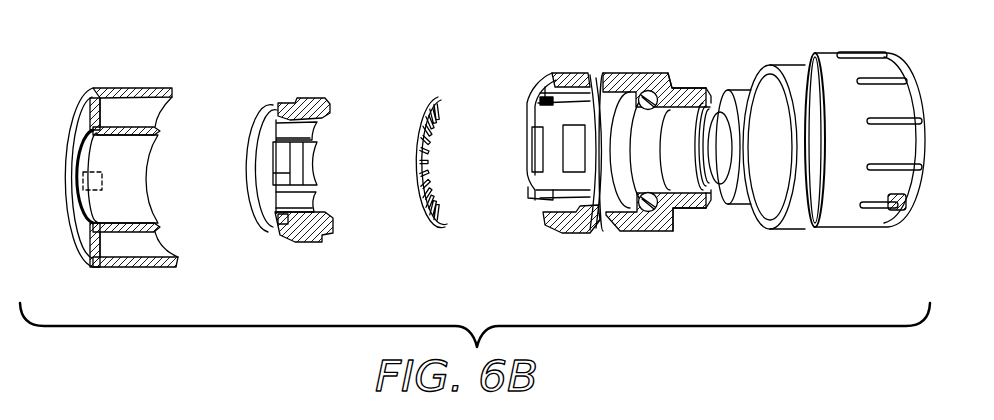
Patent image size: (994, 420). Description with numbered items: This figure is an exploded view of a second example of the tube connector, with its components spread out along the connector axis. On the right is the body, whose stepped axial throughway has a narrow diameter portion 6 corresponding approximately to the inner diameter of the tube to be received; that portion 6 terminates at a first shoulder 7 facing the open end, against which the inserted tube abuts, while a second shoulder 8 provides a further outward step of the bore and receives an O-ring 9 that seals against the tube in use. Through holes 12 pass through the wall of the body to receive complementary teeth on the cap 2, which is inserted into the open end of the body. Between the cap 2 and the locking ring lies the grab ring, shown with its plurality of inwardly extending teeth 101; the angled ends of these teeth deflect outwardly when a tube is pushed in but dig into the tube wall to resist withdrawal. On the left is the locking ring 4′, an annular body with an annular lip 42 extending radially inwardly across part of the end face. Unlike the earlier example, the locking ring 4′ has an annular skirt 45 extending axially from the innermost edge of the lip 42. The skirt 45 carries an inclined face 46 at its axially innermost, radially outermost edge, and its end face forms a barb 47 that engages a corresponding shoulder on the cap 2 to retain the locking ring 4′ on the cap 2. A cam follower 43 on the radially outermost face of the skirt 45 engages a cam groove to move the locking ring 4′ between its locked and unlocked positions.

The locking ring 4′ is at (154, 72).
The annular lip 42 is at (83, 243).
The cam follower 43 is at (68, 187).
The annular skirt 45 is at (140, 175).
The inclined face 46 is at (152, 228).
The barb 47 is at (152, 118).
The cap 2 is at (316, 85).
The teeth 101 is at (433, 149).
The through holes 12 is at (599, 72).
The narrow diameter portion 6 is at (714, 127).
The first shoulder 7 is at (717, 196).
The second shoulder 8 is at (672, 208).
The O-ring 9 is at (645, 208).